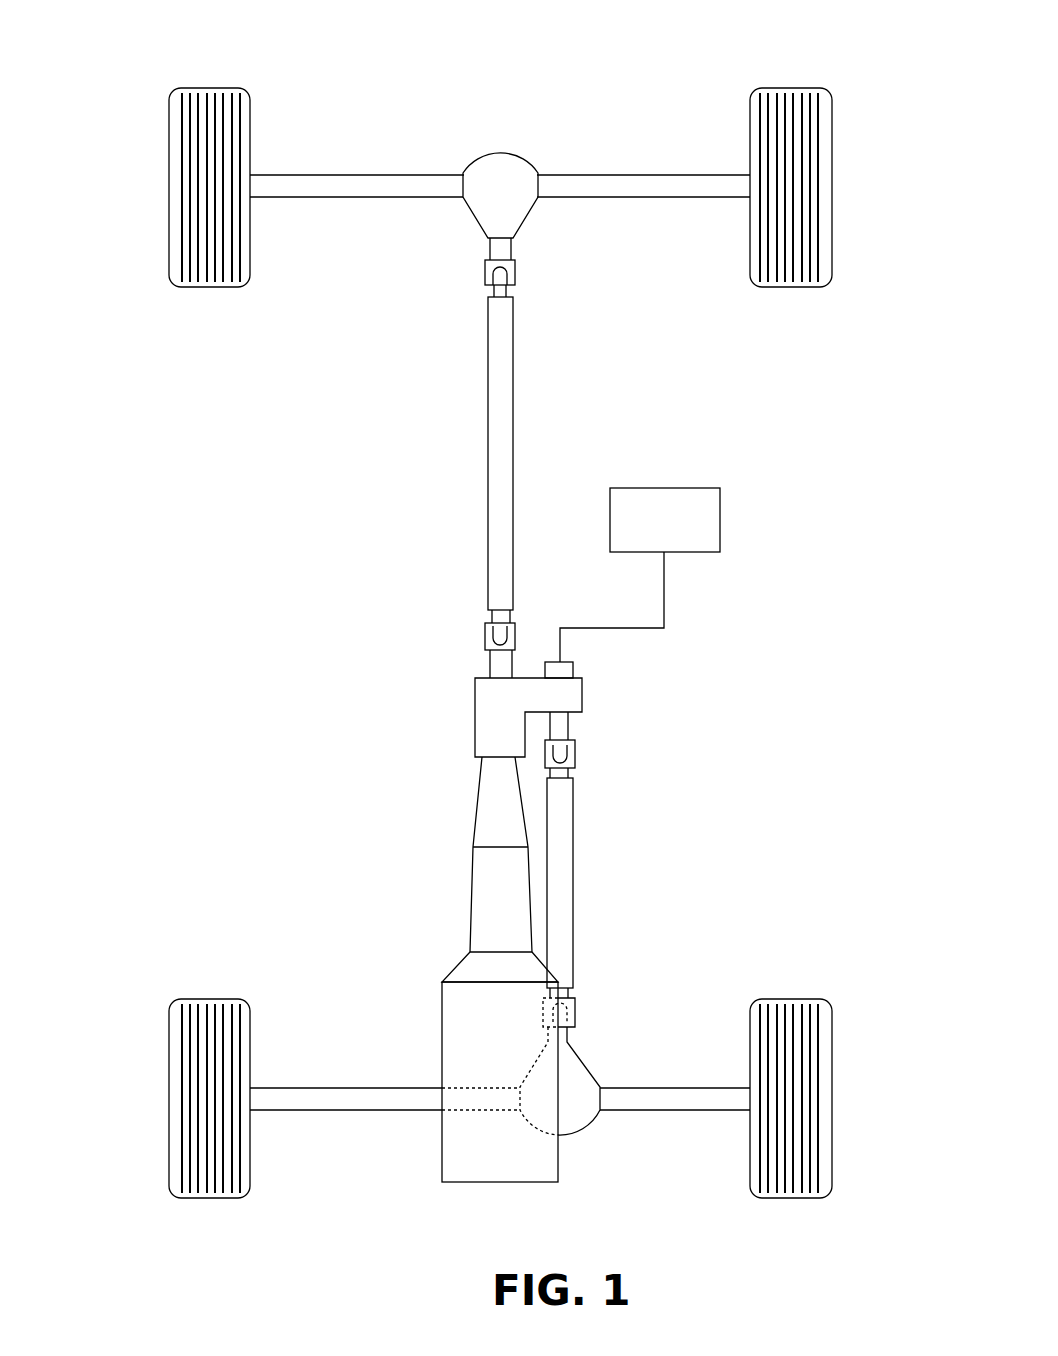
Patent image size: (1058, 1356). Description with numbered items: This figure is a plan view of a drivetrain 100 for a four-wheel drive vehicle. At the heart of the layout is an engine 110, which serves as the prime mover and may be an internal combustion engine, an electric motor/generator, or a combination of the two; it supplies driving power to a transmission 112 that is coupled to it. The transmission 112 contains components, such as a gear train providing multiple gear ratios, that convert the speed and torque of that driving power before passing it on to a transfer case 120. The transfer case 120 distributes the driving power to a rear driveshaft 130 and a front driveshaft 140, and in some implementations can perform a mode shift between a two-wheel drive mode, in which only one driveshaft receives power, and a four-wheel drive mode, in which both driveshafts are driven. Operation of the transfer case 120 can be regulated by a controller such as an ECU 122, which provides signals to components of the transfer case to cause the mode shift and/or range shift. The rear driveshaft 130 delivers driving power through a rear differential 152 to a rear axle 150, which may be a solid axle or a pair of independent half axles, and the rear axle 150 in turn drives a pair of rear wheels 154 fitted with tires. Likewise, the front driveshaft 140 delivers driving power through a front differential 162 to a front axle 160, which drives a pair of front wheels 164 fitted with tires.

The drivetrain 100 is at (112, 108).
The engine 110 is at (445, 1033).
The transmission 112 is at (480, 893).
The transfer case 120 is at (485, 718).
The ECU 122 is at (720, 522).
The rear driveshaft 130 is at (500, 453).
The front driveshaft 140 is at (568, 866).
The rear axle 150 is at (657, 178).
The rear differential 152 is at (508, 155).
The rear wheels 154 is at (253, 121).
The front axle 160 is at (687, 1097).
The front differential 162 is at (578, 1070).
The front wheels 164 is at (217, 998).